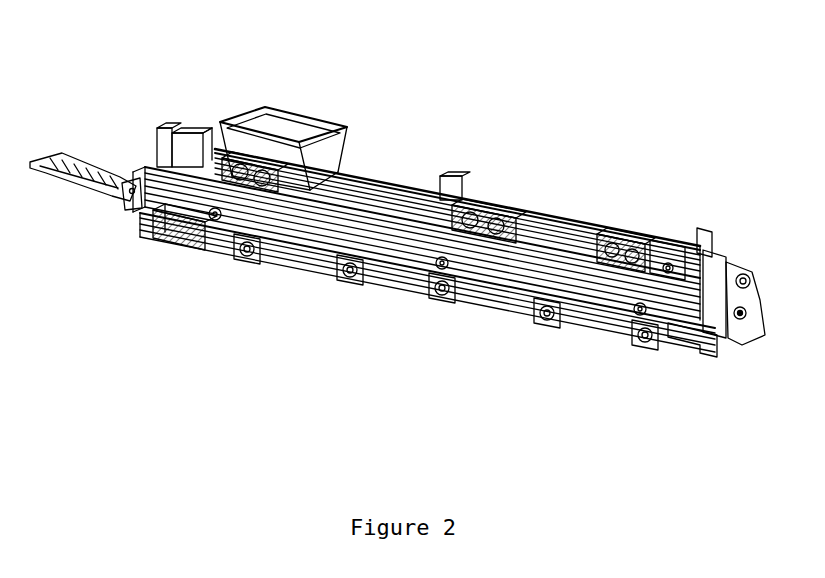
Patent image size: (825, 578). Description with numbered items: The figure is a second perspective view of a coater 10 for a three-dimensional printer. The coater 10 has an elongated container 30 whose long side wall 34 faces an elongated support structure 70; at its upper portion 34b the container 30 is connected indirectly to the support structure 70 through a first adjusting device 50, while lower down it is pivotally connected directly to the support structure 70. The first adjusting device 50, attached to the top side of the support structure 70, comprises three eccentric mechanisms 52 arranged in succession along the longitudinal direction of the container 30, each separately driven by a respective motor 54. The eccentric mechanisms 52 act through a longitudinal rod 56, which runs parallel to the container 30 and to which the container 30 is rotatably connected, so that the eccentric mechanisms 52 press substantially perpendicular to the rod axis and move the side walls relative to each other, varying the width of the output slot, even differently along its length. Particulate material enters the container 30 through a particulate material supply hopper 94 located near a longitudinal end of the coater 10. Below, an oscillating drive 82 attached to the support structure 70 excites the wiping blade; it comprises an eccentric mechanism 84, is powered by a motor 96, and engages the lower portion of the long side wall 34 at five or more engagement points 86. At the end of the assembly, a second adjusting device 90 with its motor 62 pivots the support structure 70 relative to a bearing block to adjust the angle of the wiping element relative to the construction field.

The coater 10 is at (636, 72).
The elongated container 30 is at (416, 202).
The long side wall 34 is at (457, 178).
The upper portion of the long side wall 34b is at (362, 177).
The first adjusting device 50 is at (434, 171).
The eccentric mechanism 52 is at (200, 133).
The motor 54 is at (247, 150).
The longitudinal rod 56 is at (408, 203).
The motor 62 is at (704, 266).
The elongated support structure 70 is at (528, 281).
The oscillating drive 82 is at (380, 315).
The eccentric mechanism 84 is at (228, 258).
The engagement point 86 is at (255, 256).
The second adjusting device 90 is at (703, 332).
The particulate material supply hopper 94 is at (285, 150).
The motor 96 is at (173, 243).